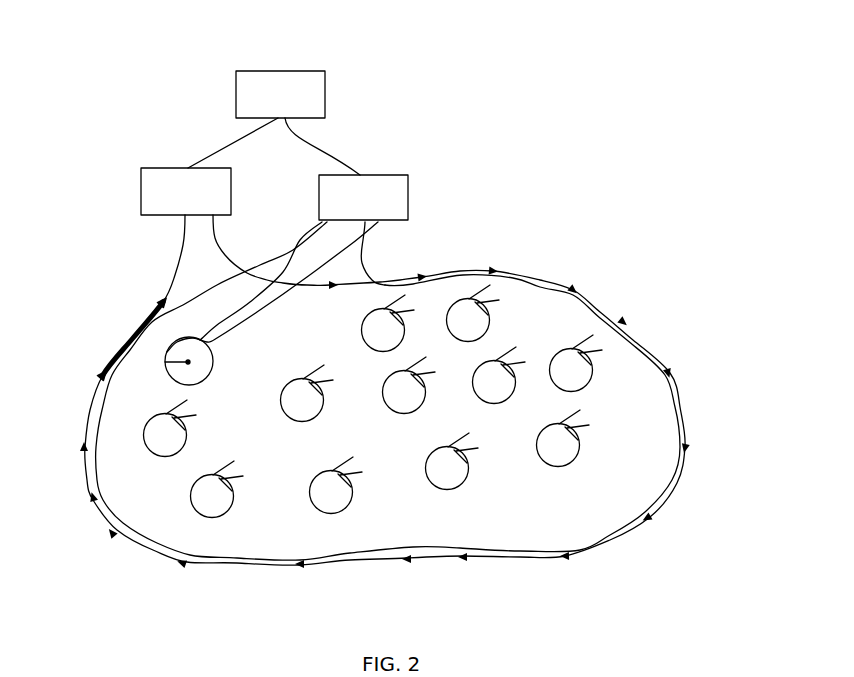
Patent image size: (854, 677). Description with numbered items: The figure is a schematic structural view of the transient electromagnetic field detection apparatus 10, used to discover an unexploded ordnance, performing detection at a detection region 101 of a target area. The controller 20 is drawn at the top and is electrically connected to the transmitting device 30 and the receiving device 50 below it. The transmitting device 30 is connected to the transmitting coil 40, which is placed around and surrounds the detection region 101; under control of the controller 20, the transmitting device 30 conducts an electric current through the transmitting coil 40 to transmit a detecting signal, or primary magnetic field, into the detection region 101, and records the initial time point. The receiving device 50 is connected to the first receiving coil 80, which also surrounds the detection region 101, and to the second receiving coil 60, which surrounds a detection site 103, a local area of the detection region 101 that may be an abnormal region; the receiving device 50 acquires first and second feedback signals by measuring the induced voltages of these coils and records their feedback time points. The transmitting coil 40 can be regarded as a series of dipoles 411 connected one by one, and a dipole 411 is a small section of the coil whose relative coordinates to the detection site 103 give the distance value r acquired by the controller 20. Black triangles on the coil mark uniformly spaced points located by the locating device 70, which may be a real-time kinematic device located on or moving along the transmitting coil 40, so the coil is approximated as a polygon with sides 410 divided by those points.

The transient electromagnetic field detection apparatus 10 is at (362, 22).
The controller 20 is at (292, 72).
The transmitting device 30 is at (168, 165).
The transmitting coil 40 is at (173, 281).
The receiving device 50 is at (388, 175).
The second receiving coil 60 is at (470, 328).
The locating device 70 is at (424, 276).
The first receiving coil 80 is at (373, 260).
The detection region 101 is at (650, 413).
The detection site 103 is at (570, 457).
The sides 410 is at (153, 312).
The dipoles 411 is at (163, 357).